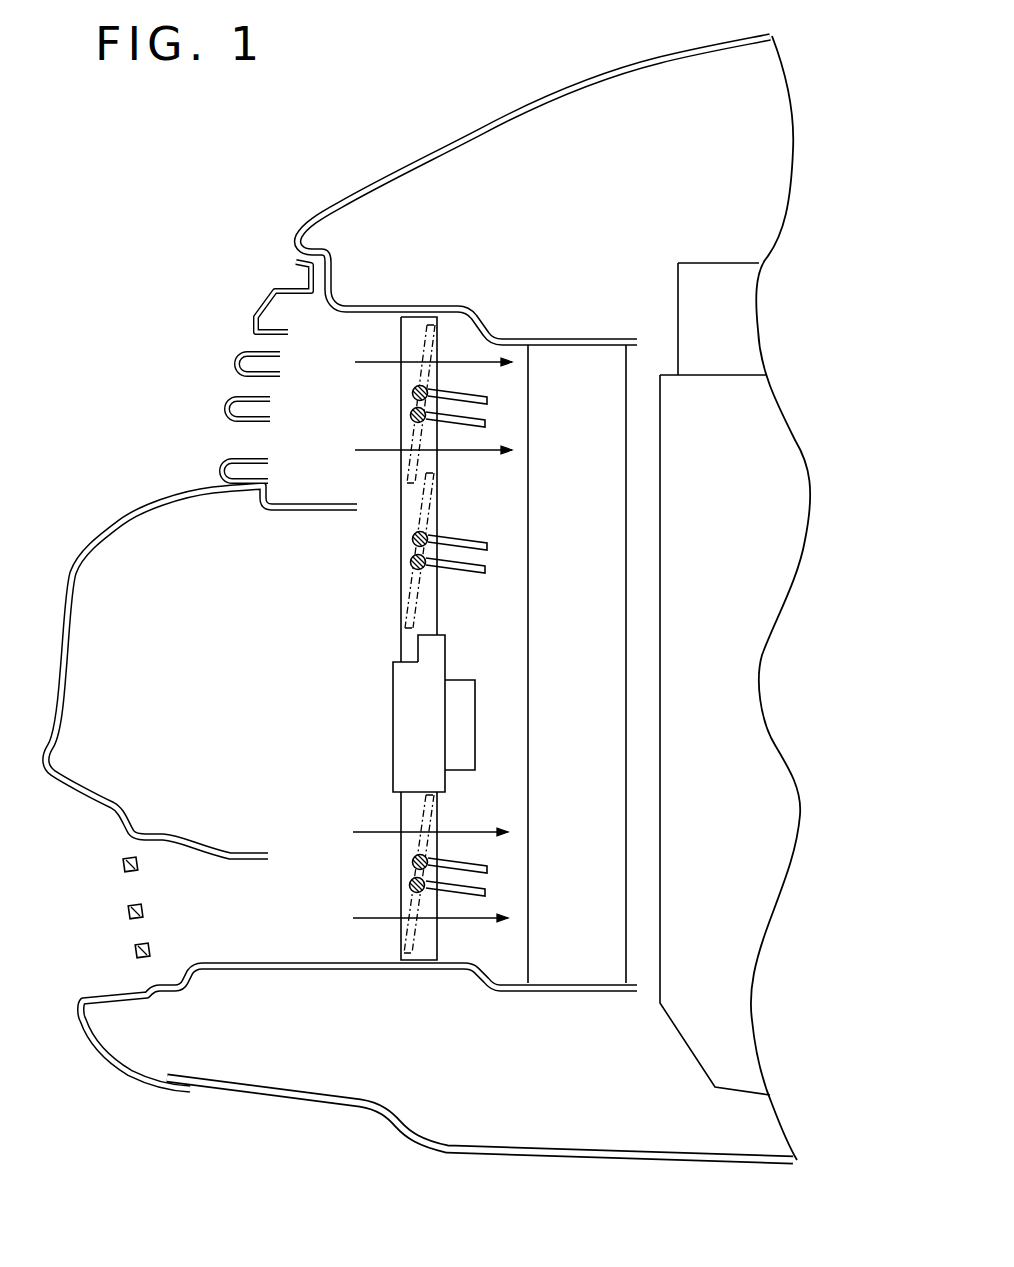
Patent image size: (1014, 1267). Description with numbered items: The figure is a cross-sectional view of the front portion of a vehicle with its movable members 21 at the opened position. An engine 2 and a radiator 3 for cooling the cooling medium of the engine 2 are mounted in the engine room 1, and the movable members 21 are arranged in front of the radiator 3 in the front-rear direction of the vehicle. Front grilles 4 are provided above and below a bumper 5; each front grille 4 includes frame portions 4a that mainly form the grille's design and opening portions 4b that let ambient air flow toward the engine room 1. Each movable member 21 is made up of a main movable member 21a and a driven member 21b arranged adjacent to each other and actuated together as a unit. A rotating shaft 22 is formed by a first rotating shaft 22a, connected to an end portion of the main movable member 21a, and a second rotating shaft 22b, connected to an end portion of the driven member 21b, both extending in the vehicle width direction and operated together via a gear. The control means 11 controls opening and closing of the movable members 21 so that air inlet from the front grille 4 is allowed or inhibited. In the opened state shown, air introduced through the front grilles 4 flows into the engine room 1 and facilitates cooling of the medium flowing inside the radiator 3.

The engine room 1 is at (612, 290).
The engine 2 is at (725, 272).
The radiator 3 is at (577, 968).
The front grille 4 is at (208, 655).
The frame portions 4a is at (243, 357).
The opening portions 4b is at (282, 345).
The bumper 5 is at (112, 527).
The control means 11 is at (467, 713).
The movable member 21 is at (524, 645).
The main movable member 21a is at (489, 543).
The driven member 21b is at (487, 568).
The rotating shaft 22 is at (357, 638).
The first rotating shaft 22a is at (413, 539).
The second rotating shaft 22b is at (411, 562).